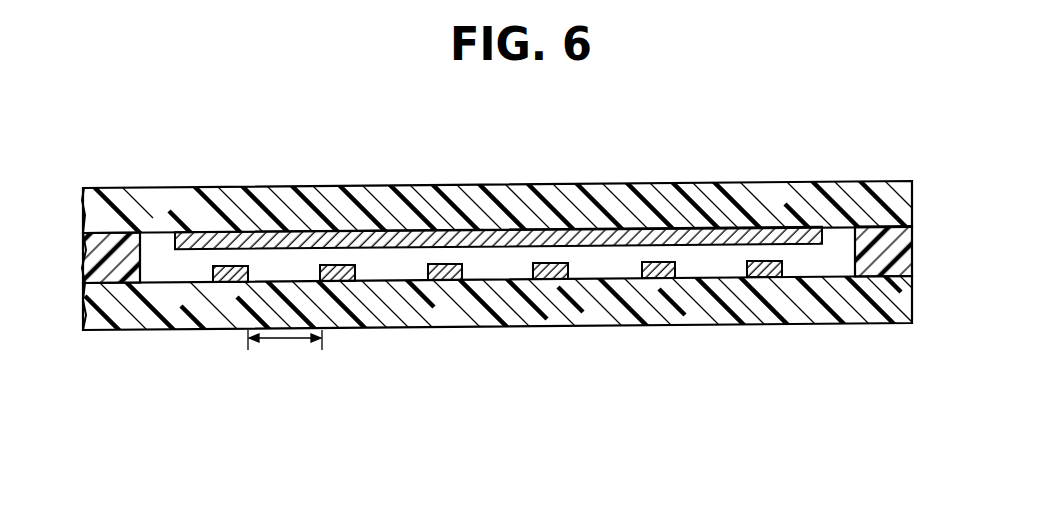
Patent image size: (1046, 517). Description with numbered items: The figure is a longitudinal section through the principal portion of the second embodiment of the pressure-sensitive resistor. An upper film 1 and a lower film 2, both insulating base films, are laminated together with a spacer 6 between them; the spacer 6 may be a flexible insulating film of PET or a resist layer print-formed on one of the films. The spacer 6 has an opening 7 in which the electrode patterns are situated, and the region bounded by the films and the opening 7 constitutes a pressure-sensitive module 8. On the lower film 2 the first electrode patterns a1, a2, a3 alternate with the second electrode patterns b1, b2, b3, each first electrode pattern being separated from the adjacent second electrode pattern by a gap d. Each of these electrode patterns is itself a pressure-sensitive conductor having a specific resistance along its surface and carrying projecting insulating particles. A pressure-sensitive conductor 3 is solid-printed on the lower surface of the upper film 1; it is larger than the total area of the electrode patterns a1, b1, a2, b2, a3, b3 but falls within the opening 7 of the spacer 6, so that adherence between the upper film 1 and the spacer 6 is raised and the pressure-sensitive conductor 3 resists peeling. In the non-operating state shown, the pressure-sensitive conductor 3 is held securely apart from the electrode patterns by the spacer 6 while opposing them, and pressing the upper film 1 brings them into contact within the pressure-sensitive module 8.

The upper film 1 is at (901, 203).
The lower film 2 is at (901, 298).
The pressure-sensitive conductor 3 is at (778, 240).
The spacer 6 is at (901, 253).
The opening 7 is at (156, 247).
The pressure-sensitive module 8 is at (656, 217).
The second electrode pattern b1 is at (233, 277).
The first electrode pattern a1 is at (338, 277).
The second electrode pattern b2 is at (444, 276).
The first electrode pattern a2 is at (553, 275).
The second electrode pattern b3 is at (660, 274).
The first electrode pattern a3 is at (767, 273).
The gap d is at (284, 341).